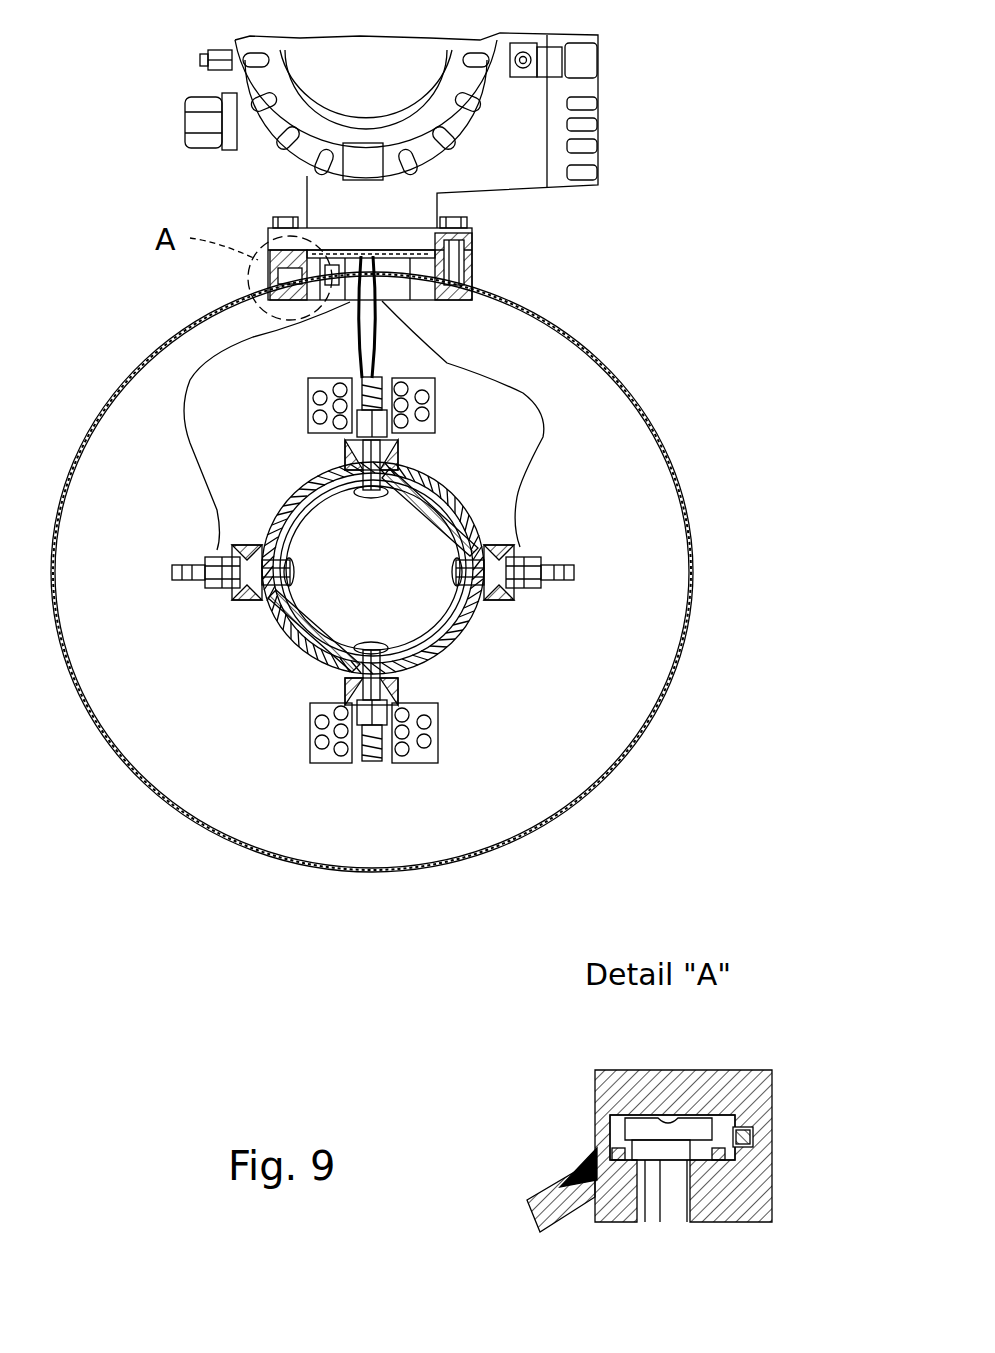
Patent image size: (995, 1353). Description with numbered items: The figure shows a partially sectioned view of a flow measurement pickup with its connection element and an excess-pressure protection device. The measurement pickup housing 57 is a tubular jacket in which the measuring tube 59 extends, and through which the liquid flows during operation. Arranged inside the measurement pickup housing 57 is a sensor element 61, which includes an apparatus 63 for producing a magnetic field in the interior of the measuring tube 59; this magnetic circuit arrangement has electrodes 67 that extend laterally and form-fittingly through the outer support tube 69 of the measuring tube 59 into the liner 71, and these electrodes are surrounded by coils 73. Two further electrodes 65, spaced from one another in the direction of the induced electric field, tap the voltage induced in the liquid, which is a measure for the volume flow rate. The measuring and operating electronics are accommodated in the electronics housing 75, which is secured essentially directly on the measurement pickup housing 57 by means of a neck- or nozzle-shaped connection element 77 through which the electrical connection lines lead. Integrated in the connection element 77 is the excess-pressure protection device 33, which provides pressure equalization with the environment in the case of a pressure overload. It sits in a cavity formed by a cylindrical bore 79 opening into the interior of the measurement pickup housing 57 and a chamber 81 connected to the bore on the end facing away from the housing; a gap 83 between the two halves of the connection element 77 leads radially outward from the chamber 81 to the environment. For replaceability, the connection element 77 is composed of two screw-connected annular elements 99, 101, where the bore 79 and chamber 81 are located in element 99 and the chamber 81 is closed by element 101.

The excess-pressure protection device 33 is at (413, 301).
The measurement pickup housing 57 is at (155, 345).
The measuring tube 59 is at (284, 480).
The sensor element 61 is at (150, 430).
The apparatus for producing a magnetic field 63 is at (303, 405).
The electrodes 65 is at (207, 553).
The electrodes 67 is at (400, 452).
The outer support tube 69 is at (457, 497).
The liner 71 is at (440, 510).
The coils 73 is at (425, 413).
The electronics housing 75 is at (207, 58).
The connection element 77 is at (473, 256).
The cylindrical bore 79 is at (675, 1208).
The chamber 81 is at (678, 1137).
The gap 83 is at (600, 1113).
The annular element 99 is at (617, 1203).
The annular element 101 is at (617, 1090).